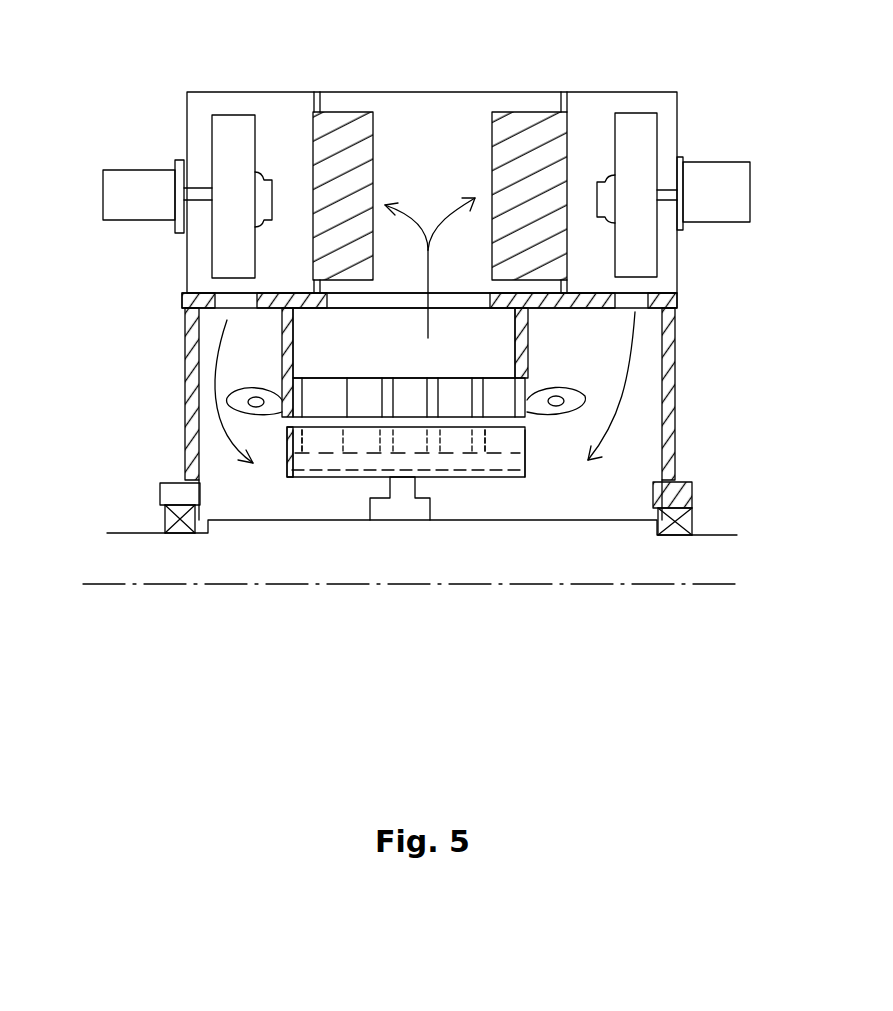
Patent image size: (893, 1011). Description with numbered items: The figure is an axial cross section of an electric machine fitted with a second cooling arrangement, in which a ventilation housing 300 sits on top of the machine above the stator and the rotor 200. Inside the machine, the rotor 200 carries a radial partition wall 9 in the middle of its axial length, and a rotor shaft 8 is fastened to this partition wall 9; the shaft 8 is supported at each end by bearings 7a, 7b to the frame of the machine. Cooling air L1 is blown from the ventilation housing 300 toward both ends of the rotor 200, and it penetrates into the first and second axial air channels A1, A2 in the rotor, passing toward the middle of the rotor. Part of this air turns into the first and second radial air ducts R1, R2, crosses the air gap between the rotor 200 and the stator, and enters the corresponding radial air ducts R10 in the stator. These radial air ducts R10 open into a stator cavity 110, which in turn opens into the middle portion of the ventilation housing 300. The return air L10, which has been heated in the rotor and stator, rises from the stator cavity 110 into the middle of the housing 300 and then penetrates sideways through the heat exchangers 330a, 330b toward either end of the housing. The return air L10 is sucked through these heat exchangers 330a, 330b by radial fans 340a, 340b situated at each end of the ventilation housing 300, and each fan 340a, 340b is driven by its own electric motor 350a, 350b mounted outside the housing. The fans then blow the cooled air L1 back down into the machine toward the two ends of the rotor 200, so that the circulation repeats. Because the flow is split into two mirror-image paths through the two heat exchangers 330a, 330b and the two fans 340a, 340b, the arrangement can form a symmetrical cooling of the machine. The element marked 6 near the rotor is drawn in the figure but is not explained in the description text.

The ventilation housing 300 is at (422, 110).
The radial fan 340a is at (230, 137).
The radial fan 340b is at (632, 137).
The heat exchanger 330a is at (340, 133).
The heat exchanger 330b is at (530, 140).
The electric motor 350a is at (128, 187).
The electric motor 350b is at (705, 183).
The return air L10 is at (430, 272).
The stator cavity 110 is at (497, 353).
The radial air ducts in the stator R10 is at (342, 393).
The coil end winding 6 is at (525, 422).
The rotor 200 is at (462, 440).
The first radial air duct R1 is at (297, 443).
The second radial air duct R2 is at (321, 474).
The first axial air channel A1 is at (517, 460).
The second axial air channel A2 is at (543, 476).
The cooling air L1 is at (213, 368).
The bearing 7a is at (168, 510).
The bearing 7b is at (693, 515).
The rotor shaft 8 is at (575, 569).
The radial partition wall 9 is at (403, 510).